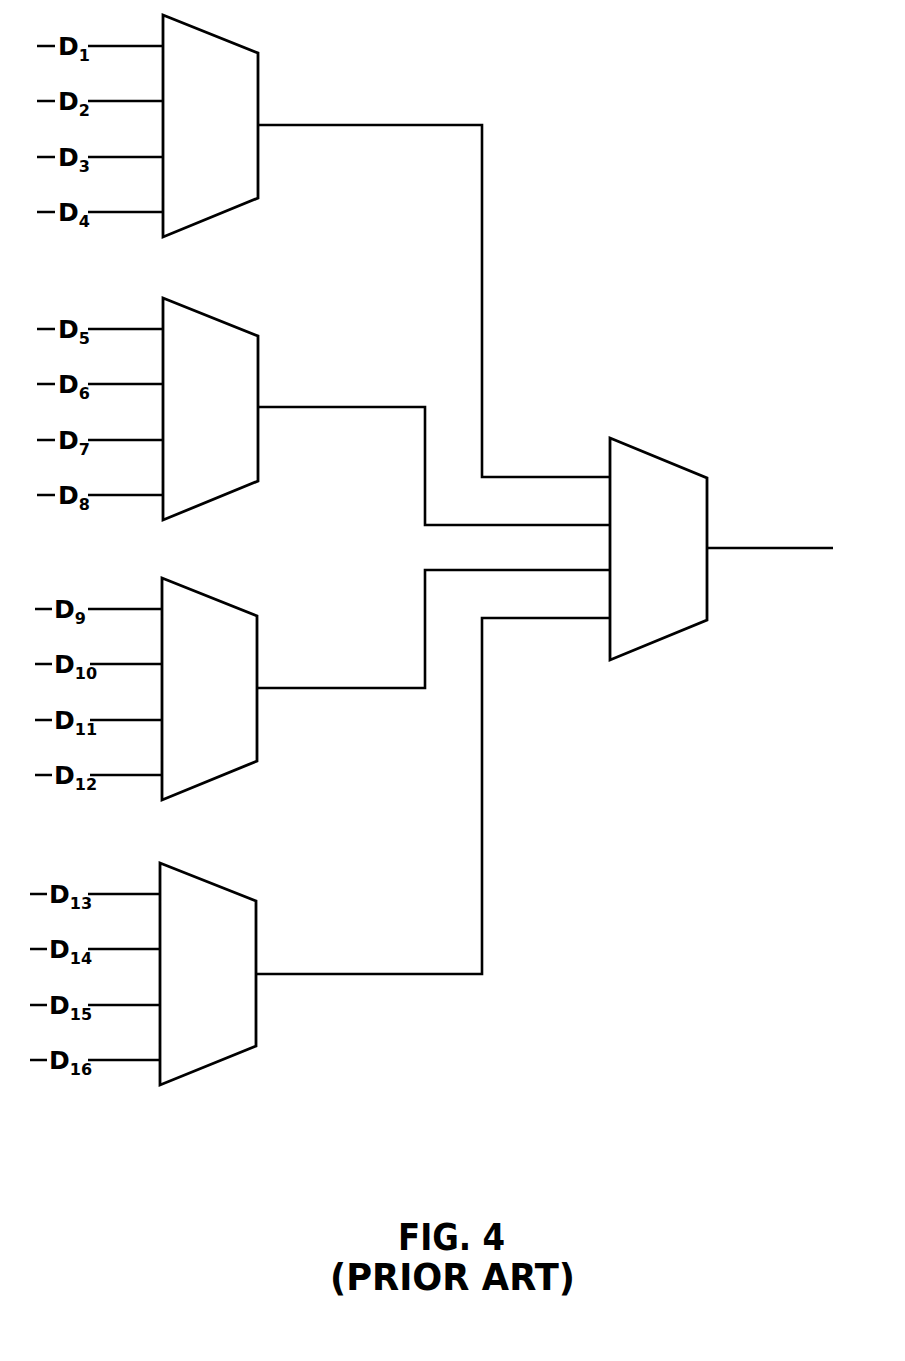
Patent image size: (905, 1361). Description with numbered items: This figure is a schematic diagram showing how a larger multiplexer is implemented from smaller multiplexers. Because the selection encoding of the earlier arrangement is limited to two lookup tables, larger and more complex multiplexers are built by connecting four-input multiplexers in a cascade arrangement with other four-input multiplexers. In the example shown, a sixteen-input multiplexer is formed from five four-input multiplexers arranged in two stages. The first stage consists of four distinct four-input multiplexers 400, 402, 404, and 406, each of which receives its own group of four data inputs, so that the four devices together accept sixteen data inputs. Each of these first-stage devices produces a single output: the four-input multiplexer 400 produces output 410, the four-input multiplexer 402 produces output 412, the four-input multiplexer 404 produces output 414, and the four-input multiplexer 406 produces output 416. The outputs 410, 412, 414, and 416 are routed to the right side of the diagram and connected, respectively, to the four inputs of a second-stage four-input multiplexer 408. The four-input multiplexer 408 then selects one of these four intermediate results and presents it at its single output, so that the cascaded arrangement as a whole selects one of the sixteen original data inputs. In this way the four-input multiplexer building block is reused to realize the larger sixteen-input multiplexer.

The four-input multiplexer 400 is at (256, 200).
The four-input multiplexer 402 is at (246, 487).
The four-input multiplexer 404 is at (242, 768).
The four-input multiplexer 406 is at (237, 1054).
The four-input multiplexer 408 is at (707, 503).
The output 410 is at (398, 126).
The output 412 is at (363, 408).
The output 414 is at (370, 689).
The output 416 is at (408, 975).